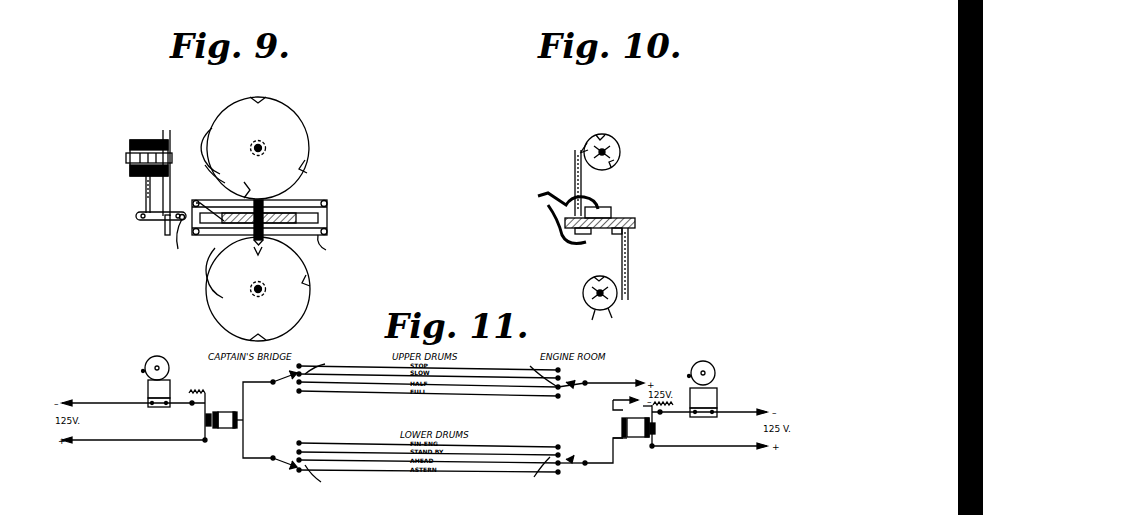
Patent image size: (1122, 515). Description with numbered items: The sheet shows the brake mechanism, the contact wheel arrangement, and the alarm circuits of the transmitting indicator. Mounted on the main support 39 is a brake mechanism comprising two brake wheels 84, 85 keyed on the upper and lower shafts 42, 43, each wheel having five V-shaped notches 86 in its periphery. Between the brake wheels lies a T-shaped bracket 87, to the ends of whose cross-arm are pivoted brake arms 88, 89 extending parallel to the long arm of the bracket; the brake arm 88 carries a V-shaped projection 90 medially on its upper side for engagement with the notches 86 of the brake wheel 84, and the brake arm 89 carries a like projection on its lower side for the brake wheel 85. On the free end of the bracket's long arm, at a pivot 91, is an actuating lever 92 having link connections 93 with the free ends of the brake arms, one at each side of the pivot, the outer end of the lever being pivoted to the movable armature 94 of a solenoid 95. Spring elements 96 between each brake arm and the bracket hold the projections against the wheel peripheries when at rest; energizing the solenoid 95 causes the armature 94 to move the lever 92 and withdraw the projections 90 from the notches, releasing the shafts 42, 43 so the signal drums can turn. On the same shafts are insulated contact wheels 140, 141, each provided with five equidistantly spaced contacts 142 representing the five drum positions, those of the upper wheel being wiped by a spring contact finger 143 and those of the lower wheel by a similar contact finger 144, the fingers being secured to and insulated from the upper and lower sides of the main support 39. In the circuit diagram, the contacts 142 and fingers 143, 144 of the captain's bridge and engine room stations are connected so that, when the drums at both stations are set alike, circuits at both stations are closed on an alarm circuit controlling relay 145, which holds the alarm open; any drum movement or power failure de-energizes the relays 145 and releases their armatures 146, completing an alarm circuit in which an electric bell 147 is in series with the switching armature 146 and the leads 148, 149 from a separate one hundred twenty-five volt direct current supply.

In FIG. 10, the main support 39 is at (636, 223).
In FIG. 9, the upper shaft 42 is at (254, 149).
In FIG. 10, the upper shaft 42 is at (618, 149).
In FIG. 9, the lower shaft 43 is at (254, 288).
In FIG. 10, the lower shaft 43 is at (590, 297).
In FIG. 9, the brake wheel 84 is at (298, 138).
In FIG. 9, the brake wheel 85 is at (297, 294).
In FIG. 9, the V-shaped notches 86 is at (206, 146).
In FIG. 9, the T-shaped bracket 87 is at (330, 215).
In FIG. 9, the brake arm 88 is at (314, 200).
In FIG. 9, the brake arm 89 is at (333, 247).
In FIG. 9, the V-shaped projection 90 is at (254, 219).
In FIG. 9, the pivot 91 is at (182, 212).
In FIG. 9, the actuating lever 92 is at (156, 220).
In FIG. 9, the link connections 93 is at (170, 228).
In FIG. 9, the movable armature 94 is at (143, 188).
In FIG. 9, the solenoid 95 is at (148, 140).
In FIG. 9, the spring elements 96 is at (226, 201).
In FIG. 10, the upper contact wheel 140 is at (601, 133).
In FIG. 10, the lower contact wheel 141 is at (617, 305).
In FIG. 10, the contacts 142 is at (587, 147).
In FIG. 11, the contacts 142 is at (428, 421).
In FIG. 10, the spring contact finger 143 is at (574, 176).
In FIG. 11, the spring contact finger 143 is at (280, 385).
In FIG. 10, the contact finger 144 is at (630, 263).
In FIG. 11, the contact finger 144 is at (276, 465).
In FIG. 11, the alarm circuit controlling relay 145 is at (226, 428).
In FIG. 11, the switching armature 146 is at (205, 418).
In FIG. 11, the electric bell 147 is at (152, 388).
In FIG. 11, the lead 148 is at (103, 404).
In FIG. 11, the lead 149 is at (104, 441).